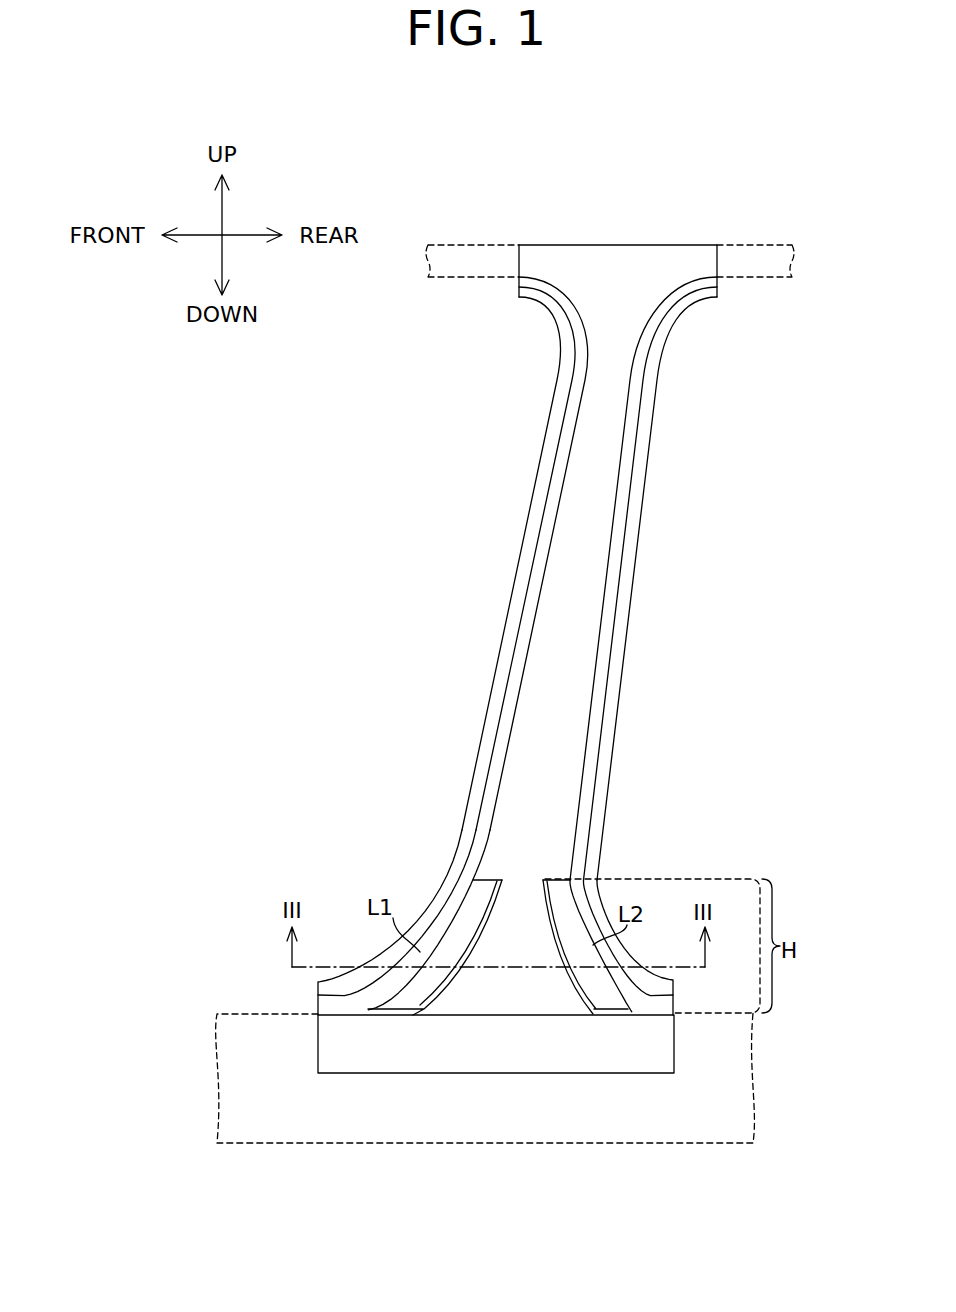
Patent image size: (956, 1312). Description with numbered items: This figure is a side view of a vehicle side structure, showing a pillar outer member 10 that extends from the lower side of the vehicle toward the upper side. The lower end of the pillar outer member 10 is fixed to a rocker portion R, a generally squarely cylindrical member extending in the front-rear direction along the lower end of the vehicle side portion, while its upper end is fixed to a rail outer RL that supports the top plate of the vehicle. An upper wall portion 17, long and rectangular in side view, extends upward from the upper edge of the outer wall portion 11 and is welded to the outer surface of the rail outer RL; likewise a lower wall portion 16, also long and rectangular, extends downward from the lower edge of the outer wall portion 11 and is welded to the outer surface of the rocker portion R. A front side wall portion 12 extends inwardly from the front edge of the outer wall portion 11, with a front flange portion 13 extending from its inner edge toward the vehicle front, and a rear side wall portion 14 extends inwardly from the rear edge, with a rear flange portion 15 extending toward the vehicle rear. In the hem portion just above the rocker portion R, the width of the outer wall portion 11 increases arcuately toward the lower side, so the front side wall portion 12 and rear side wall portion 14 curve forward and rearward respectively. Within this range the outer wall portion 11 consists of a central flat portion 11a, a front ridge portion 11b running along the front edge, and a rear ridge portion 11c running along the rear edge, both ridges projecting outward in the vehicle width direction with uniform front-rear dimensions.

The pillar outer member 10 is at (460, 386).
The outer wall portion 11 is at (517, 667).
The flat portion 11a is at (513, 912).
The front ridge portion 11b is at (445, 993).
The rear ridge portion 11c is at (567, 988).
The front side wall portion 12 is at (550, 522).
The front flange portion 13 is at (517, 590).
The rear side wall portion 14 is at (620, 529).
The rear flange portion 15 is at (618, 690).
The lower wall portion 16 is at (500, 1043).
The upper wall portion 17 is at (617, 244).
The rocker portion R is at (688, 1143).
The rail outer RL is at (746, 244).